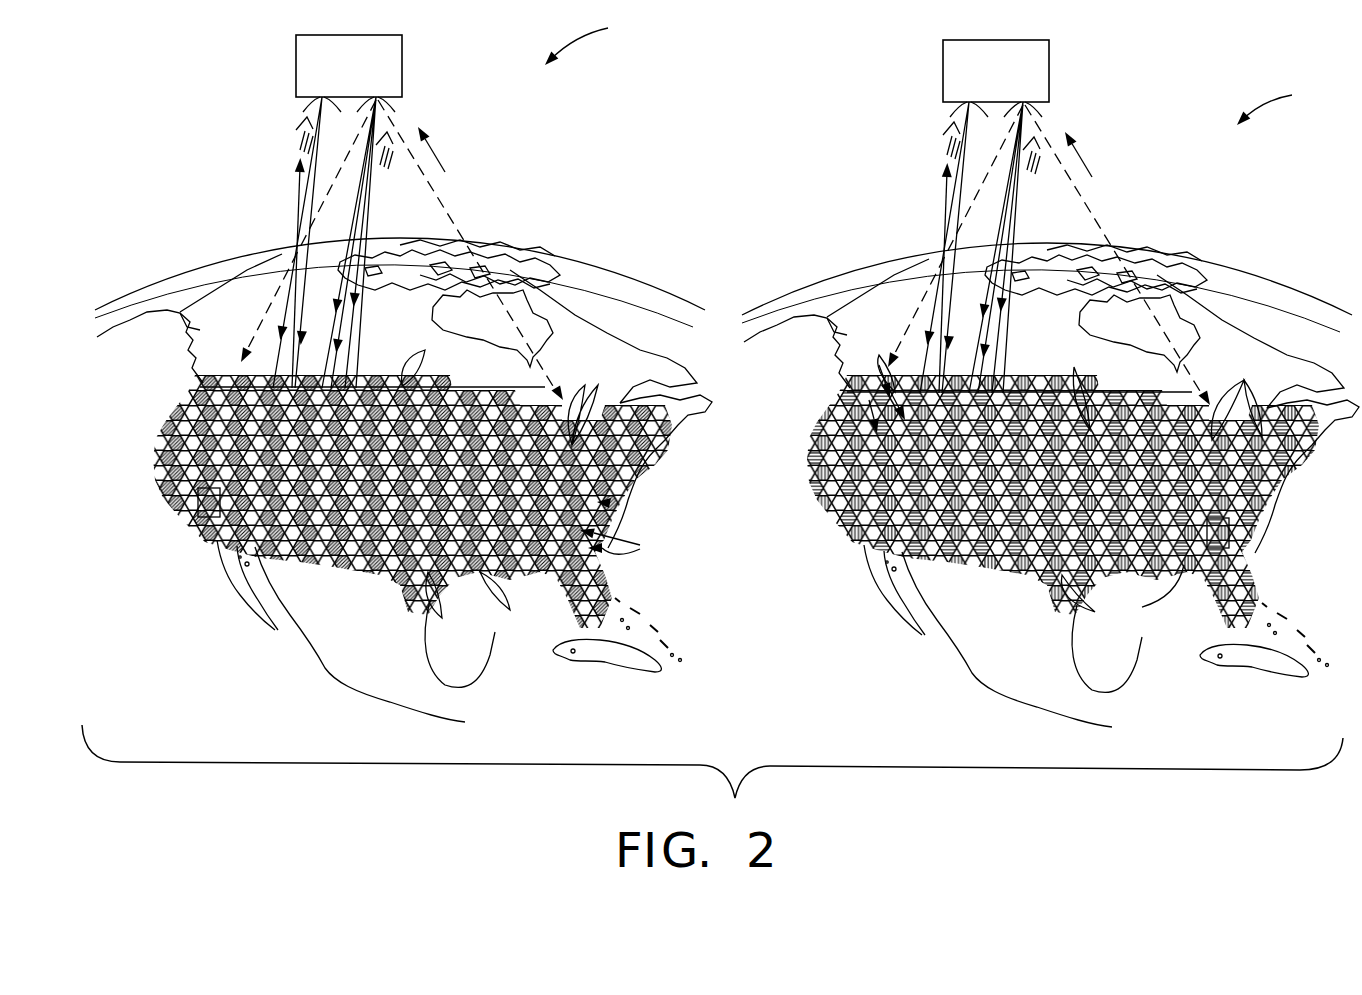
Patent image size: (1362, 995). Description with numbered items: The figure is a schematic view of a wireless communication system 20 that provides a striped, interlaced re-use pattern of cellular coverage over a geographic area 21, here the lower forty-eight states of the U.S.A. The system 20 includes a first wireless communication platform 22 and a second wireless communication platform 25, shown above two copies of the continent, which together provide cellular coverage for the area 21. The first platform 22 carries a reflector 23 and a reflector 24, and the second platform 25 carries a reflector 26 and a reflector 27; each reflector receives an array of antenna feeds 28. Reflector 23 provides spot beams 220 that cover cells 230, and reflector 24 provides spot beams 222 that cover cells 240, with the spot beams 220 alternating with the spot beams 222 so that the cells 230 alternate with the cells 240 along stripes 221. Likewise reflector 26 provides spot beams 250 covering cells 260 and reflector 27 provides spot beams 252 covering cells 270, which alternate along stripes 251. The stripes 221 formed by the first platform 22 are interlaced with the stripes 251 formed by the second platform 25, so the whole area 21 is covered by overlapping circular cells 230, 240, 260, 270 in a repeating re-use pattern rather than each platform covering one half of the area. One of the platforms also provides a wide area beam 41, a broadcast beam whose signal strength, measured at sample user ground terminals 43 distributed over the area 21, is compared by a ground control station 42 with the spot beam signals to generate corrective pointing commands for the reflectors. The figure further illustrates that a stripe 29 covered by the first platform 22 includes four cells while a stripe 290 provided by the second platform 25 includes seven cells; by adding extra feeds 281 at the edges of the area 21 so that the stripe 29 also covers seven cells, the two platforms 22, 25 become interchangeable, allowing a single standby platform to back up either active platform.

The wireless communication system 20 is at (937, 71).
The geographic area 21 is at (640, 498).
The first wireless communication platform 22 is at (333, 85).
The reflector 23 is at (310, 103).
The reflector 24 is at (397, 107).
The second wireless communication platform 25 is at (996, 71).
The reflector 26 is at (941, 111).
The reflector 27 is at (1055, 111).
The antenna feeds 28 is at (290, 140).
The stripe 29 is at (212, 548).
The wide area beam 41 is at (455, 224).
The ground control station 42 is at (196, 503).
The user ground terminals 43 is at (742, 451).
The spot beams 220 is at (285, 238).
The stripes 221 is at (468, 602).
The spot beams 222 is at (362, 220).
The cells 230 is at (439, 360).
The cells 240 is at (609, 403).
The spot beams 250 is at (904, 247).
The stripes 251 is at (1122, 594).
The spot beams 252 is at (1023, 247).
The cells 260 is at (1100, 388).
The cells 270 is at (1256, 401).
The extra feeds 281 is at (295, 186).
The stripe 290 is at (215, 562).